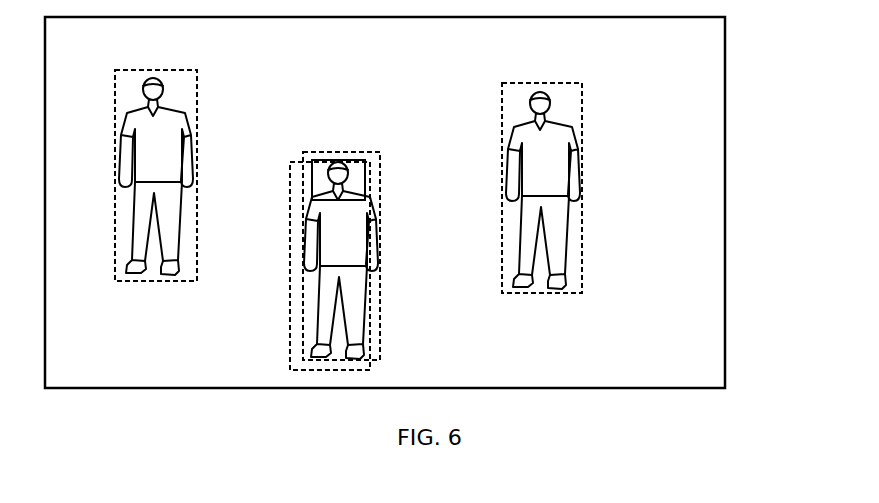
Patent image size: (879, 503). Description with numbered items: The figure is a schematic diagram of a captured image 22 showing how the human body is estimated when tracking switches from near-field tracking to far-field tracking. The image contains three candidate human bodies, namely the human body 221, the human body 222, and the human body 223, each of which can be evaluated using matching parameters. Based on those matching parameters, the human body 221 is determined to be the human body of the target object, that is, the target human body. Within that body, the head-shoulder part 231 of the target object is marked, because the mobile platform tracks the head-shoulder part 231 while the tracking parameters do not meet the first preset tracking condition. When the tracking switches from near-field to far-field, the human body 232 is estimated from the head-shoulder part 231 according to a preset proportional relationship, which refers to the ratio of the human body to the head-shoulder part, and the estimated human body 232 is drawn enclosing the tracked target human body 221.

The image frame 22 is at (725, 200).
The human body 221 is at (380, 255).
The human body 222 is at (582, 187).
The human body 223 is at (197, 173).
The head-shoulder part 231 is at (368, 177).
The human body 232 is at (290, 320).